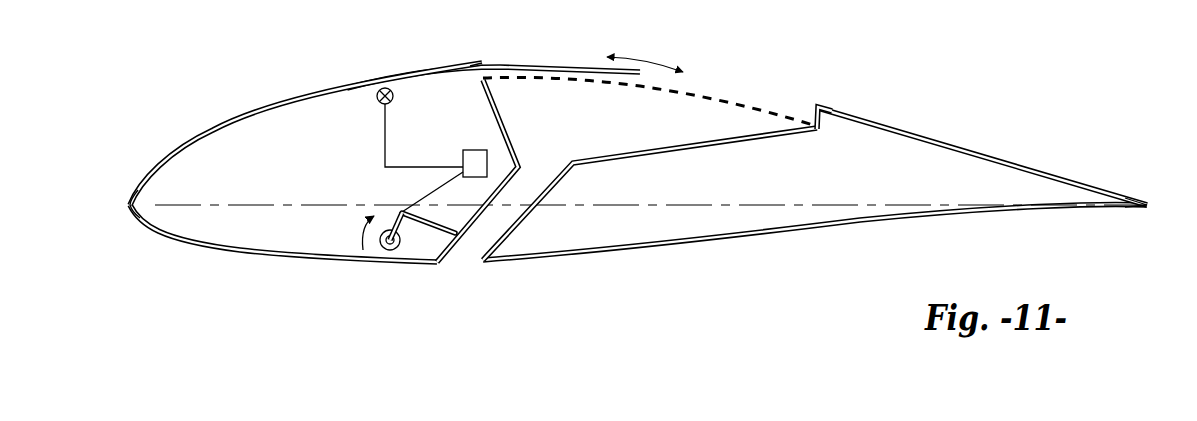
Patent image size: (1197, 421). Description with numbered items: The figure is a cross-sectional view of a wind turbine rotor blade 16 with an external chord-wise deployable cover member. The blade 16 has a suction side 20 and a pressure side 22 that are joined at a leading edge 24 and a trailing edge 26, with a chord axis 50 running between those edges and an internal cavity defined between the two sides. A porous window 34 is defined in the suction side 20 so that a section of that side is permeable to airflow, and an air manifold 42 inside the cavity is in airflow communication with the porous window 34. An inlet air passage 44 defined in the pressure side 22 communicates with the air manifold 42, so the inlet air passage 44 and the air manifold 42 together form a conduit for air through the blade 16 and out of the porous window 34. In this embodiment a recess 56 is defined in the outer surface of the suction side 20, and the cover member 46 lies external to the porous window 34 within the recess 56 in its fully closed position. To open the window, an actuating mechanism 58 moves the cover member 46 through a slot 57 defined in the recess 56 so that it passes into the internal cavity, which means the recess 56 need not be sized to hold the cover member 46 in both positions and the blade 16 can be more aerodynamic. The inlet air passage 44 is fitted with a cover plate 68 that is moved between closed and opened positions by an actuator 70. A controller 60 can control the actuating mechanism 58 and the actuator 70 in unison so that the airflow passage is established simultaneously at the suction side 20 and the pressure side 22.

The wind turbine rotor blade 16 is at (926, 87).
The suction side 20 is at (373, 73).
The pressure side 22 is at (237, 250).
The leading edge 24 is at (127, 206).
The trailing edge 26 is at (1150, 205).
The porous window 34 is at (698, 80).
The air manifold 42 is at (640, 158).
The inlet air passage 44 is at (492, 221).
The cover member 46 is at (517, 68).
The chord axis 50 is at (197, 204).
The recess 56 is at (817, 125).
The slot 57 is at (474, 74).
The actuating mechanism 58 is at (376, 98).
The controller 60 is at (473, 150).
The cover plate 68 is at (458, 250).
The actuator 70 is at (386, 226).